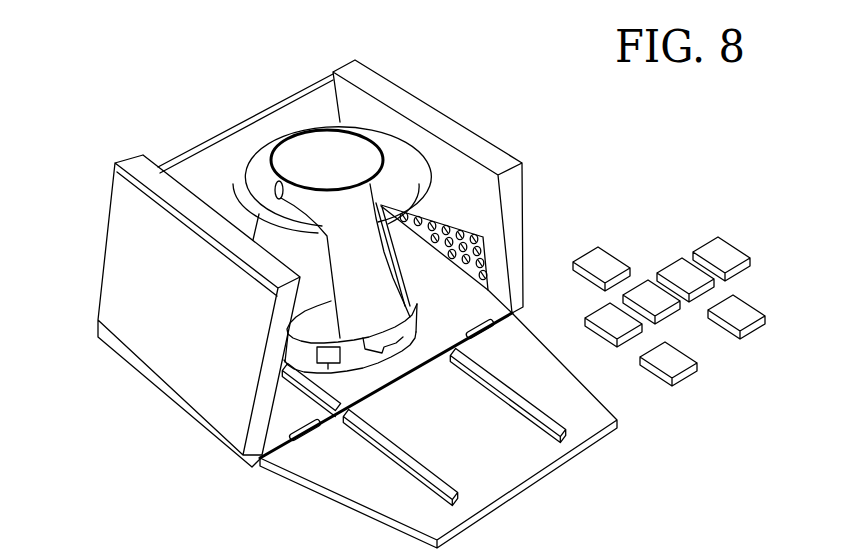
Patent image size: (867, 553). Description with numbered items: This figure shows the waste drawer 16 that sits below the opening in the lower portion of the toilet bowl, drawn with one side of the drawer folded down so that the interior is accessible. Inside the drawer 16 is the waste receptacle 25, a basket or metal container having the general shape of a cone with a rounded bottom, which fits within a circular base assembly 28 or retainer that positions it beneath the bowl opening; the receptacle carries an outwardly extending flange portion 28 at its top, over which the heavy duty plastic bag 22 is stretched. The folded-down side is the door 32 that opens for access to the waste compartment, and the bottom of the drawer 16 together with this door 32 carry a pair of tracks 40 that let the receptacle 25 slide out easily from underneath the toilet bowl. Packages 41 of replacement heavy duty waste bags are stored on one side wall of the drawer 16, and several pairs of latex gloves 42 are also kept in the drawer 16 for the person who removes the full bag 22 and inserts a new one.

The waste drawer 16 is at (128, 260).
The heavy duty plastic bag 22 is at (290, 153).
The waste receptacle 25 is at (395, 150).
The circular base assembly 28 is at (293, 338).
The door 32 is at (500, 478).
The tracks 40 is at (528, 410).
The packages of waste bags 41 is at (747, 313).
The pairs of latex gloves 42 is at (720, 257).